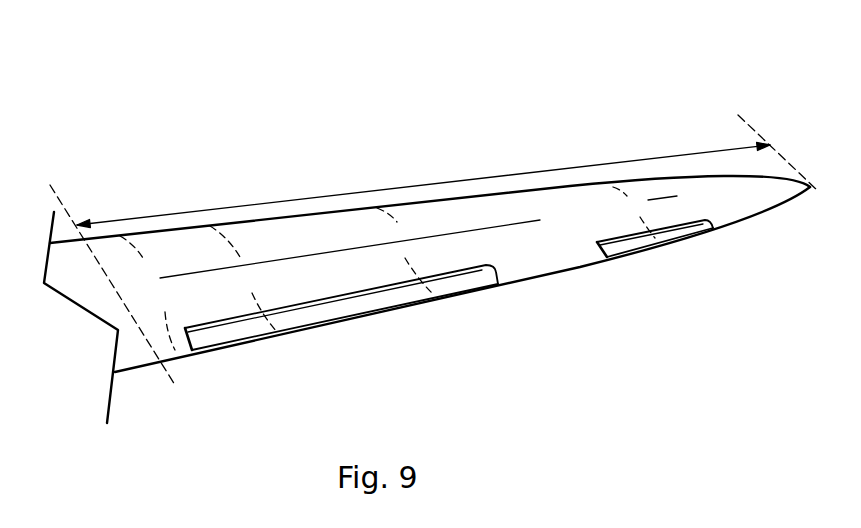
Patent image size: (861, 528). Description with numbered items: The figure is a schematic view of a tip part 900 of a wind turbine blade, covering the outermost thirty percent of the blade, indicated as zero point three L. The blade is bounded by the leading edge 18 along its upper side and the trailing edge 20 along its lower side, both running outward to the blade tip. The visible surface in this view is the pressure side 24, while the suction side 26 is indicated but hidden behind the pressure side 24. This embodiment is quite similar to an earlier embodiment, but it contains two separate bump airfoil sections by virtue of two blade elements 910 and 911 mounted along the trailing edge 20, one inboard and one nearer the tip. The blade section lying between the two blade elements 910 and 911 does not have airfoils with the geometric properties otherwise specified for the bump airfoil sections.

The tip part 900 is at (160, 51).
The leading edge 18 is at (143, 234).
The trailing edge 20 is at (173, 360).
The pressure side 24 is at (412, 215).
The suction side 26 is at (292, 232).
The blade element 910 is at (440, 283).
The blade element 911 is at (620, 245).